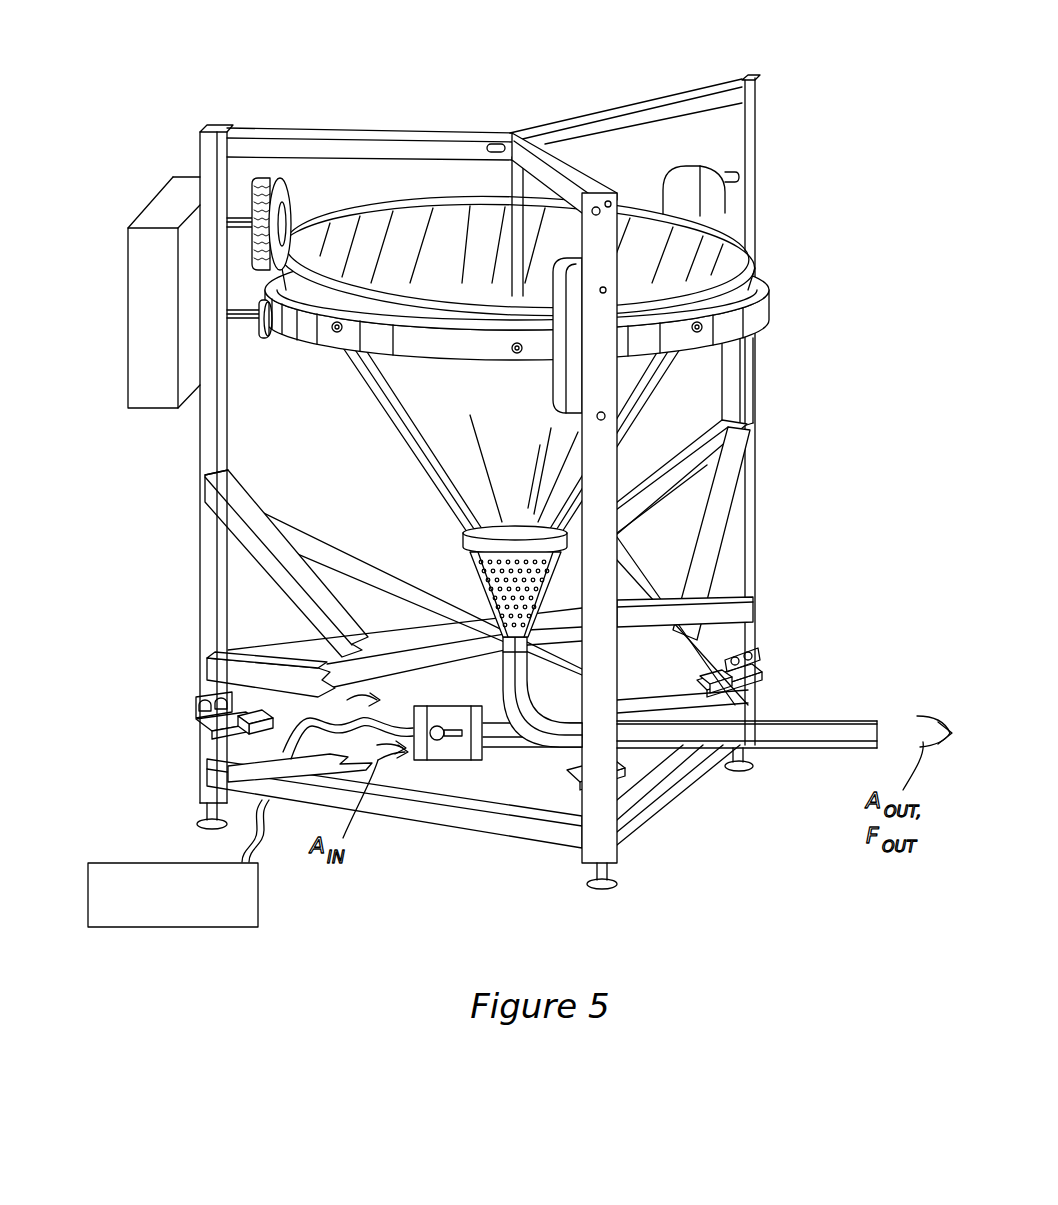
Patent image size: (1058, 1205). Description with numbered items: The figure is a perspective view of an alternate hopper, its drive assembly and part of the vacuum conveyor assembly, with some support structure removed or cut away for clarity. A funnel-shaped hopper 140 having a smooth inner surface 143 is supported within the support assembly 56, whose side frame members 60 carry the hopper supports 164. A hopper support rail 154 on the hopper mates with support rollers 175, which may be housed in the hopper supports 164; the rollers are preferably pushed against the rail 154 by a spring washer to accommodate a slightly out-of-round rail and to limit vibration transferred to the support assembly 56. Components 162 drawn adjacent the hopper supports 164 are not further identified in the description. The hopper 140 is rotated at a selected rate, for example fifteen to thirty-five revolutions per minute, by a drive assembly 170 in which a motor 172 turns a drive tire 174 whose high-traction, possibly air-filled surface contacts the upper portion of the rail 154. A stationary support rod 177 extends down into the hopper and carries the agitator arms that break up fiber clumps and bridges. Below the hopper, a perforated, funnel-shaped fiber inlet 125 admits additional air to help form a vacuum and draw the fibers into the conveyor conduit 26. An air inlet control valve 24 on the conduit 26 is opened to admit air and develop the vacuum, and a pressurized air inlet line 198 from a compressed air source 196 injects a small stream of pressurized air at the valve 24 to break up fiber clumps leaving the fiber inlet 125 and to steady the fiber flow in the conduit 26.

The support assembly 56 is at (775, 100).
The side frame members 60 is at (757, 553).
The air inlet control valve 24 is at (422, 708).
The conveyor conduit 26 is at (840, 718).
The fiber inlet 125 is at (473, 575).
The hopper 140 is at (566, 352).
The inner surface 143 is at (362, 237).
The hopper support rail 154 is at (768, 320).
The mounting block 162 is at (747, 688).
The hopper supports 164 is at (700, 176).
The drive assembly 170 is at (135, 283).
The motor 172 is at (128, 383).
The drive tire 174 is at (278, 195).
The support rollers 175 is at (262, 340).
The stationary support rod 177 is at (513, 240).
The compressed air source 196 is at (178, 927).
The pressurized air inlet line 198 is at (260, 840).